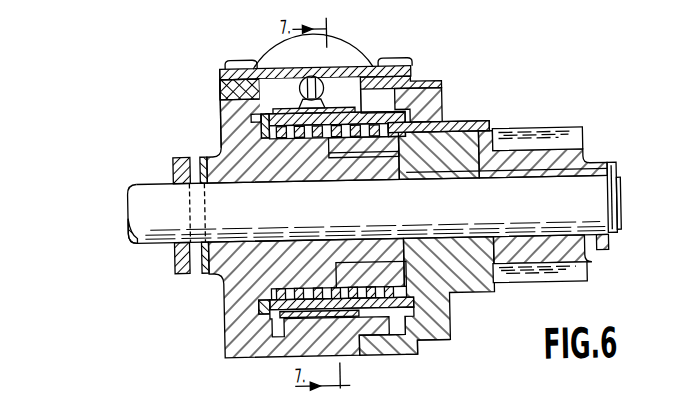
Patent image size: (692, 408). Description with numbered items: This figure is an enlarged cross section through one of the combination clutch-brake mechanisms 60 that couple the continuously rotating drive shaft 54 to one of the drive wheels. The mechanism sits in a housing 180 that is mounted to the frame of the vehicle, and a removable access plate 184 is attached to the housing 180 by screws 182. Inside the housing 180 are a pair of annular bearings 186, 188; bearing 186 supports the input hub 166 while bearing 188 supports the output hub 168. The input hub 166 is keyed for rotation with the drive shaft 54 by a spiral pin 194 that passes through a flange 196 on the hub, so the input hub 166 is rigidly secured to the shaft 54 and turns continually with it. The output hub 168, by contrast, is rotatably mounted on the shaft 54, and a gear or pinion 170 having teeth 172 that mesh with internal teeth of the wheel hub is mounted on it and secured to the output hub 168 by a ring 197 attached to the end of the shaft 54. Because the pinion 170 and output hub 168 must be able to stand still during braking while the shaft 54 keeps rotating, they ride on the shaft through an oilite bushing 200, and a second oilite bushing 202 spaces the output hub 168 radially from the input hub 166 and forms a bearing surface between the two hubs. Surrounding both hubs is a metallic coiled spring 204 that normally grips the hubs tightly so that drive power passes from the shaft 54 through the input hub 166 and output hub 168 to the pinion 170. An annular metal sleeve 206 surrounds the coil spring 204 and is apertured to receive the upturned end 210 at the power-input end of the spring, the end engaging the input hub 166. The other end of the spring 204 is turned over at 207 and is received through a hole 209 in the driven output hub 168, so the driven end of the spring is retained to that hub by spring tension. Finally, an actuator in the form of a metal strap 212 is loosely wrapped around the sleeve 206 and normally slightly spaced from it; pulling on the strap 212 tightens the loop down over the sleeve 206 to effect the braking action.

The shaft 54 is at (150, 183).
The combination clutch-brake mechanism 60 is at (211, 109).
The input hub 166 is at (237, 316).
The output hub 168 is at (476, 270).
The gear 170 is at (585, 160).
The teeth 172 is at (563, 131).
The housing 180 is at (416, 356).
The screws 182 is at (244, 58).
The removable access plate 184 is at (358, 52).
The annular bearing 186 is at (222, 75).
The annular bearing 188 is at (432, 84).
The spiral pin 194 is at (190, 158).
The flange 196 is at (176, 256).
The ring 197 is at (618, 172).
The oilite bushing 200 is at (606, 254).
The second oilite bushing 202 is at (330, 148).
The coiled spring 204 is at (270, 287).
The annular metal sleeve 206 is at (448, 341).
The turned-over end of spring 207 is at (433, 90).
The hole 209 is at (449, 122).
The upturned end of coil spring 210 is at (222, 124).
The metal strap 212 is at (353, 318).